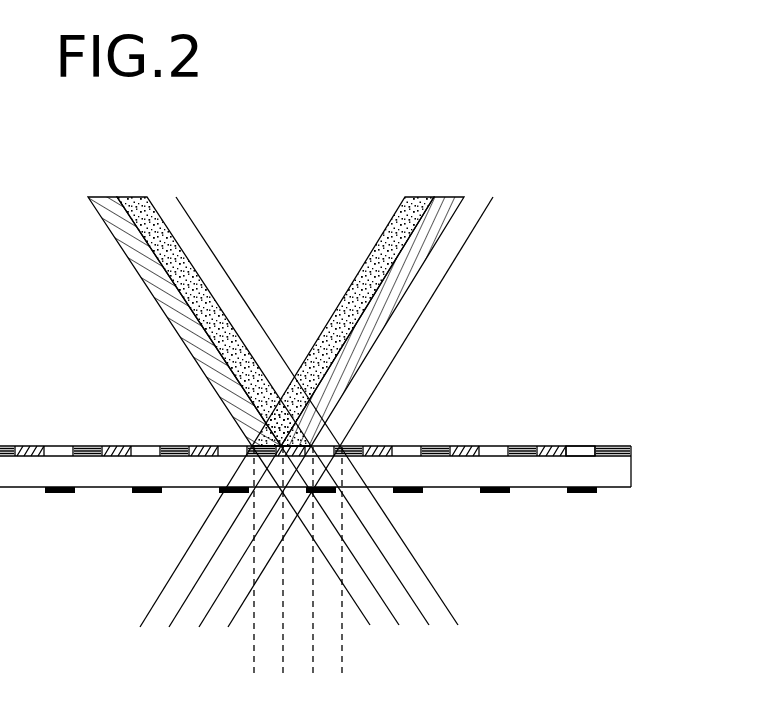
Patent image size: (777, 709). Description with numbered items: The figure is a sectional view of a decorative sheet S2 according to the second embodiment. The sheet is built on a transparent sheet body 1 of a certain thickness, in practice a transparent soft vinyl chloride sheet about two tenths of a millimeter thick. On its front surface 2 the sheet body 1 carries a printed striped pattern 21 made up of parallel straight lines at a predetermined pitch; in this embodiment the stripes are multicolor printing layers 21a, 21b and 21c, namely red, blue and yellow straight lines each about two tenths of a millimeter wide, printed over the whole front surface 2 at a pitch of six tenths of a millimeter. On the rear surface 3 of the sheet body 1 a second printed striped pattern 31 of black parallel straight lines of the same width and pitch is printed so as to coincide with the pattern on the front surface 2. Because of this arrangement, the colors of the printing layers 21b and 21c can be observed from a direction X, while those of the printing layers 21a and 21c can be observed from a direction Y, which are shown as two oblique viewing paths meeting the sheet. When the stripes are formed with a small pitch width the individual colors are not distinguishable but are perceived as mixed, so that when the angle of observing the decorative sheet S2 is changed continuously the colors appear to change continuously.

The decorative sheet S2 is at (490, 398).
The direction Y is at (273, 387).
The direction X is at (316, 388).
The front surface 2 is at (610, 448).
The printed striped pattern 21 is at (583, 447).
The printing layer 21a is at (268, 562).
The printing layer 21b is at (301, 562).
The printing layer 21c is at (331, 562).
The transparent sheet body 1 is at (627, 472).
The rear surface 3 is at (610, 490).
The printed striped pattern 31 is at (582, 493).